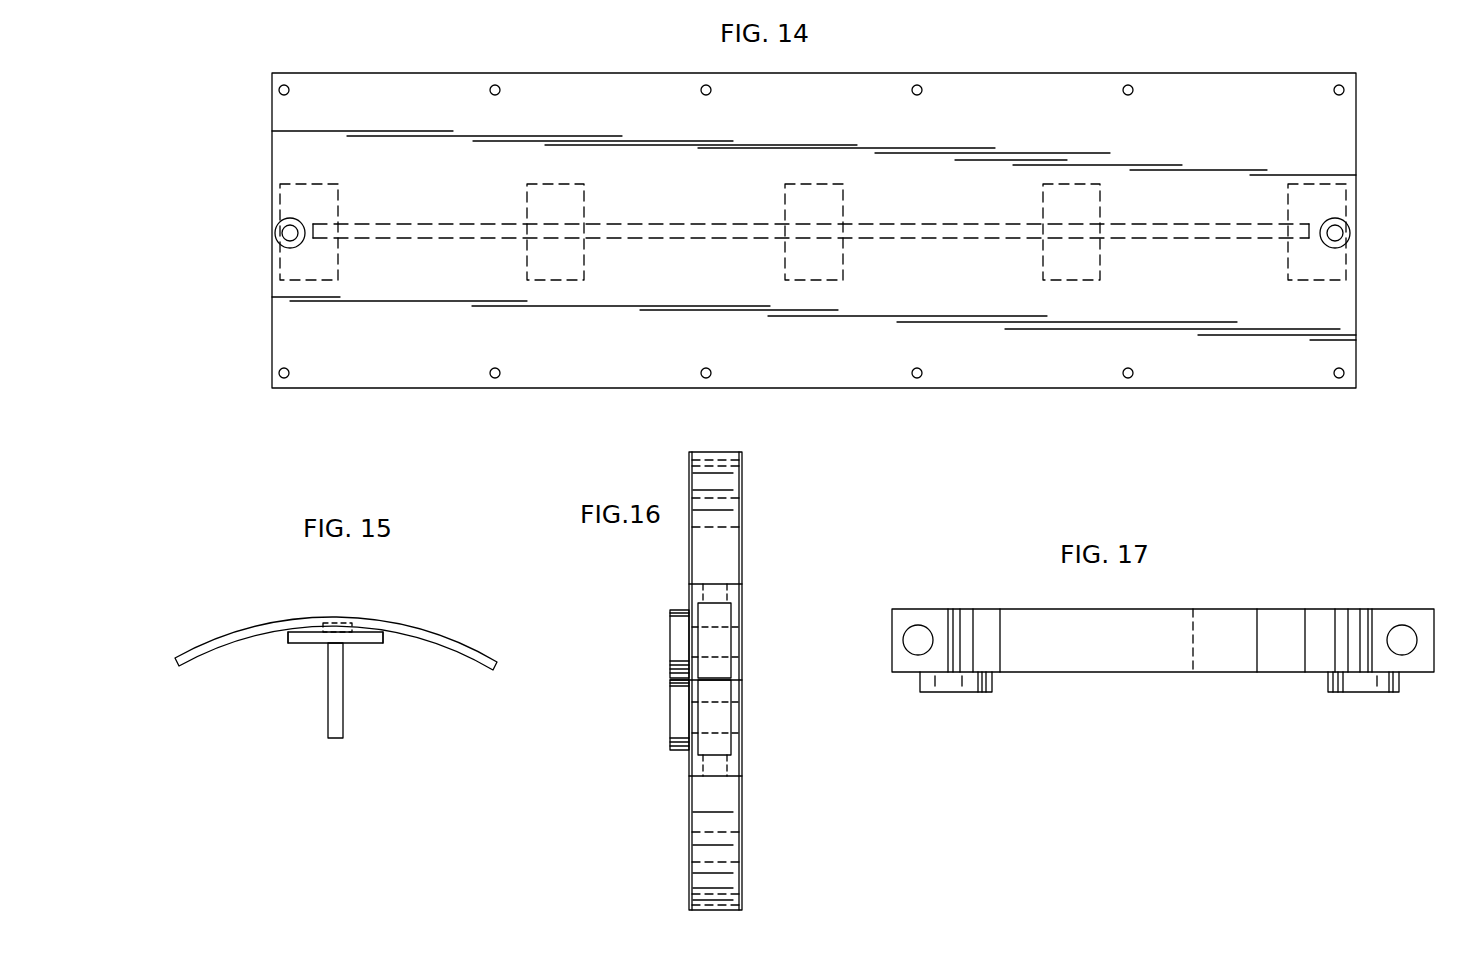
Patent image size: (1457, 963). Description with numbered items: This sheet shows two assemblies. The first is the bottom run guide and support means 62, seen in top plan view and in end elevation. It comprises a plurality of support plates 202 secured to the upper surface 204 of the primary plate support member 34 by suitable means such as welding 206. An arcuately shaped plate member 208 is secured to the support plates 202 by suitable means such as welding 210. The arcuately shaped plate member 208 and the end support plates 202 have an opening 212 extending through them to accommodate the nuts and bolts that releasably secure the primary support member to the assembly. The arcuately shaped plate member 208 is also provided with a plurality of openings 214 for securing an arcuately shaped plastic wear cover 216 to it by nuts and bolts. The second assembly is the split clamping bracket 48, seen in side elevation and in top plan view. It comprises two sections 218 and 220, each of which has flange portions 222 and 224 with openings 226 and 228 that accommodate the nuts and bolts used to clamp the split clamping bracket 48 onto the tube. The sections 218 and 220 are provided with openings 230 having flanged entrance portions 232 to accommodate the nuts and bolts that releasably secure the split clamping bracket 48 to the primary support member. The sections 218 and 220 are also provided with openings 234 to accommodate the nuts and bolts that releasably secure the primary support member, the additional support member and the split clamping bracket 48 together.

In FIG. 15, the primary plate support member 34 is at (338, 717).
In FIG. 16, the split clamping bracket 48 is at (632, 796).
In FIG. 17, the split clamping bracket 48 is at (1140, 729).
In FIG. 14, the bottom run guide and support means 62 is at (258, 394).
In FIG. 15, the bottom run guide and support means 62 is at (257, 726).
In FIG. 14, the support plates 202 is at (321, 208).
In FIG. 15, the support plates 202 is at (370, 643).
In FIG. 14, the upper surface 204 is at (648, 242).
In FIG. 15, the upper surface 204 is at (343, 634).
In FIG. 15, the welding 206 is at (330, 644).
In FIG. 14, the arcuately shaped plate member 208 is at (578, 378).
In FIG. 15, the arcuately shaped plate member 208 is at (437, 638).
In FIG. 15, the welding 210 is at (287, 639).
In FIG. 14, the opening 212 is at (282, 236).
In FIG. 15, the opening 212 is at (349, 633).
In FIG. 14, the openings 214 is at (921, 87).
In FIG. 15, the arcuately shaped plastic wear cover 216 is at (211, 641).
In FIG. 16, the section 218 is at (730, 799).
In FIG. 16, the section 220 is at (727, 558).
In FIG. 17, the flange portion 222 is at (900, 609).
In FIG. 17, the flange portion 224 is at (1402, 610).
In FIG. 17, the opening 226 is at (913, 649).
In FIG. 17, the opening 228 is at (1407, 648).
In FIG. 16, the openings 230 is at (735, 643).
In FIG. 16, the flanged entrance portions 232 is at (677, 622).
In FIG. 17, the flanged entrance portions 232 is at (955, 692).
In FIG. 16, the openings 234 is at (742, 511).